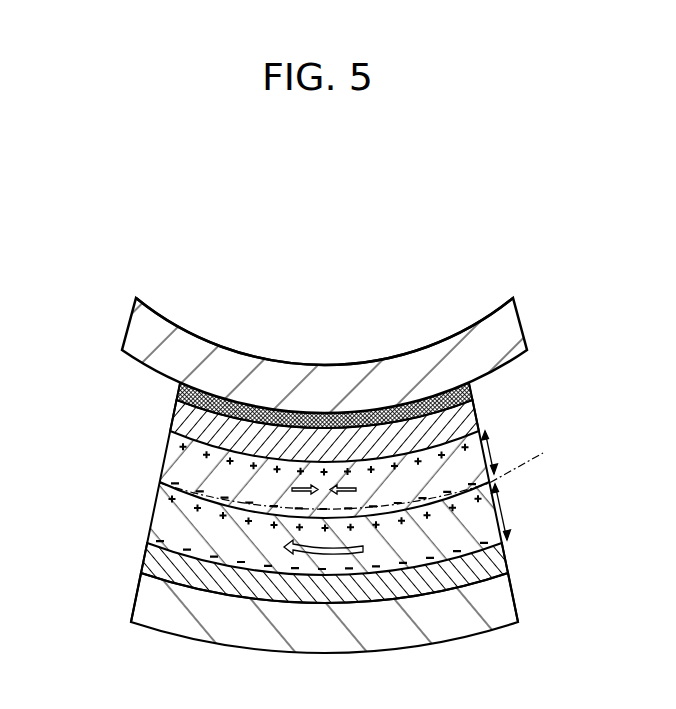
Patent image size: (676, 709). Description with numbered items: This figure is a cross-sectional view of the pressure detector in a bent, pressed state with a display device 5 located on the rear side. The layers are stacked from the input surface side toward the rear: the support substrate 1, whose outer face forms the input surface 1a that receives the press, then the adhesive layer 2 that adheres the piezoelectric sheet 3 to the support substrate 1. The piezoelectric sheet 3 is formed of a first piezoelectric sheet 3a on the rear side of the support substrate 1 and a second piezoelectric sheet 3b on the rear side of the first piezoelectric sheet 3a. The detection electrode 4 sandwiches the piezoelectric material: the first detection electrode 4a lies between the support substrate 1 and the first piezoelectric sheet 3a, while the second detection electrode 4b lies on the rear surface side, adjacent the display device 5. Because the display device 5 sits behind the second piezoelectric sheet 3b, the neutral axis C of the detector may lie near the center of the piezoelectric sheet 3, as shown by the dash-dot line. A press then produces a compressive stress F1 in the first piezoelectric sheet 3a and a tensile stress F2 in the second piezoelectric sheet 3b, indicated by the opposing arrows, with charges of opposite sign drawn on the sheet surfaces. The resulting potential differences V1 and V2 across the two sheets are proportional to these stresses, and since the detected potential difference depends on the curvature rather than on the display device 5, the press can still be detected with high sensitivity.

The support substrate 1 is at (497, 332).
The input surface 1a is at (325, 365).
The adhesive layer 2 is at (473, 389).
The piezoelectric sheet 3 is at (262, 503).
The first piezoelectric sheet 3a is at (193, 458).
The second piezoelectric sheet 3b is at (188, 522).
The detection electrode 4 is at (383, 500).
The first detection electrode 4a is at (462, 415).
The second detection electrode 4b is at (492, 565).
The display device 5 is at (487, 603).
The neutral axis C is at (160, 483).
The stress in first piezoelectric sheet F1 is at (357, 489).
The tensile stress in second piezoelectric sheet F2 is at (339, 546).
The potential difference across first piezoelectric sheet V1 is at (527, 443).
The potential difference across second piezoelectric sheet V2 is at (536, 497).